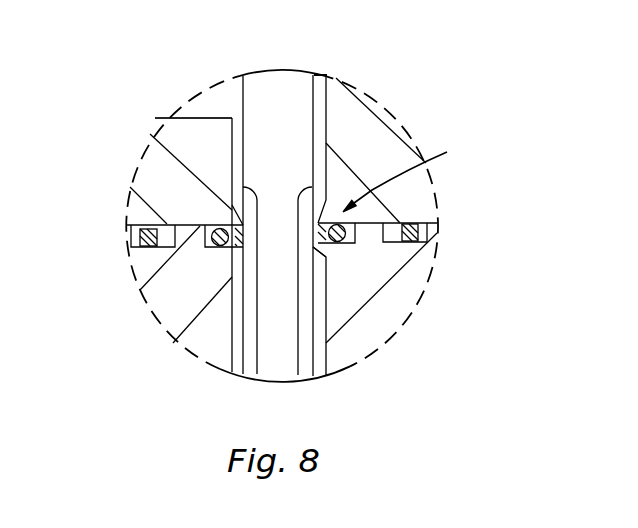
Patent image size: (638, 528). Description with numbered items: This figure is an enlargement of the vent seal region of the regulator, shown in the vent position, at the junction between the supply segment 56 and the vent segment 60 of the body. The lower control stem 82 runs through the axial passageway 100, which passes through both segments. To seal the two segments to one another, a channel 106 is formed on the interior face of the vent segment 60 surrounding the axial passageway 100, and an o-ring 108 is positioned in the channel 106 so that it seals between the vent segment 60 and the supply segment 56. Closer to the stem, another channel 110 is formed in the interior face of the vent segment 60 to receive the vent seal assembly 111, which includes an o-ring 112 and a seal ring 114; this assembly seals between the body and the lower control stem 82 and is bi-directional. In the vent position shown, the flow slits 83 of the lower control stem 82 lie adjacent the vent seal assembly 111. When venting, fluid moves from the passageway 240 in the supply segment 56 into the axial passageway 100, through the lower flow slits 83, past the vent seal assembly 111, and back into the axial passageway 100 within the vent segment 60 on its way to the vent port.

The supply segment 56 is at (160, 172).
The vent segment 60 is at (180, 308).
The lower control stem 82 is at (278, 88).
The flow slits 83 is at (255, 203).
The axial passageway 100 is at (334, 86).
The channel 106 is at (166, 238).
The o-ring 108 is at (143, 237).
The channel 110 is at (355, 224).
The vent seal assembly 111 is at (409, 176).
The o-ring 112 is at (318, 243).
The seal ring 114 is at (313, 260).
The passageway 240 is at (217, 108).